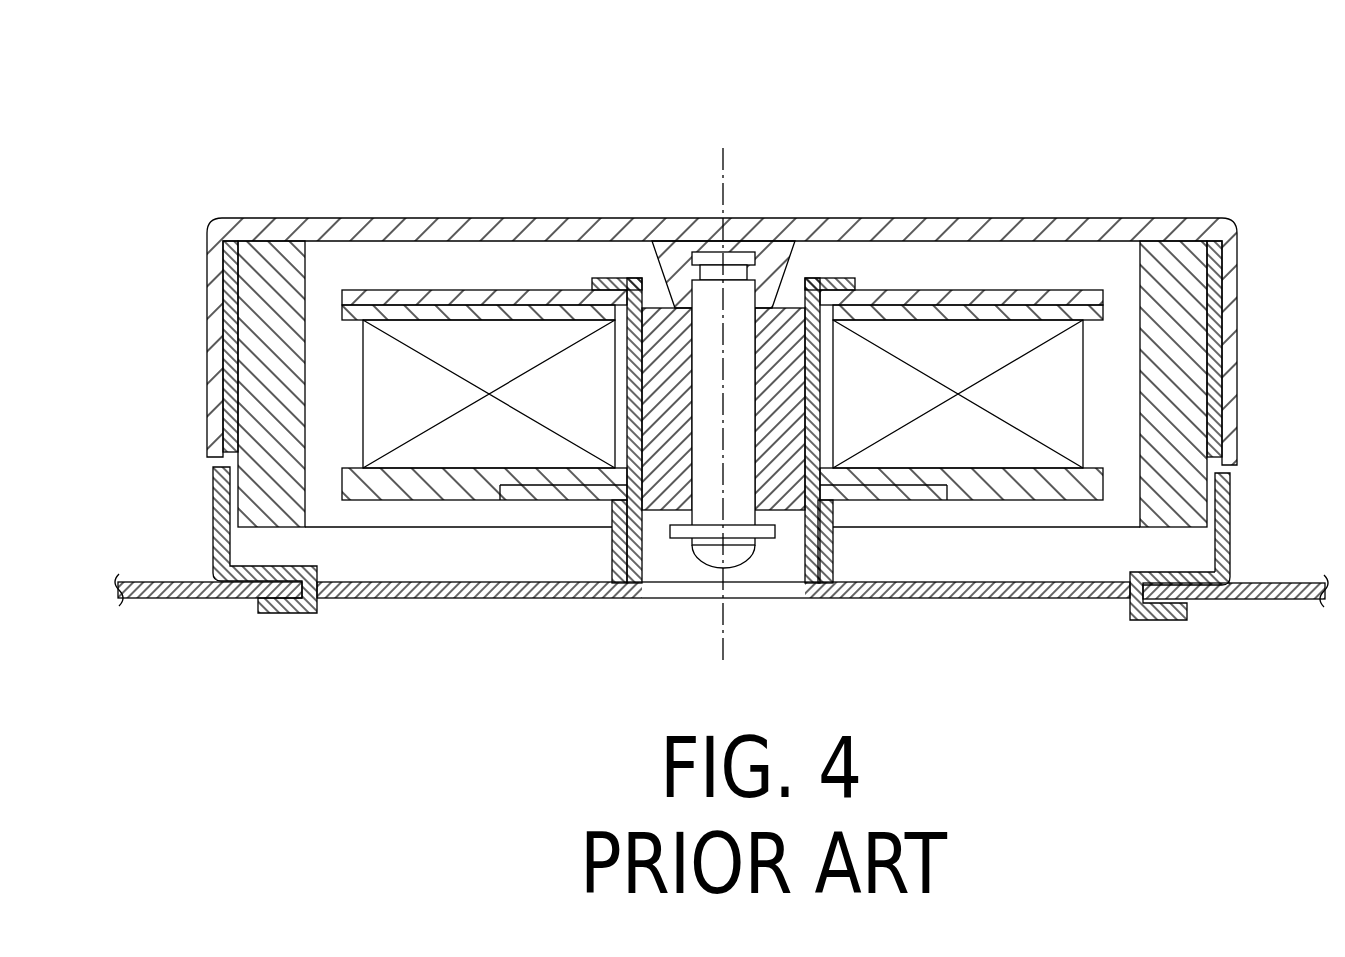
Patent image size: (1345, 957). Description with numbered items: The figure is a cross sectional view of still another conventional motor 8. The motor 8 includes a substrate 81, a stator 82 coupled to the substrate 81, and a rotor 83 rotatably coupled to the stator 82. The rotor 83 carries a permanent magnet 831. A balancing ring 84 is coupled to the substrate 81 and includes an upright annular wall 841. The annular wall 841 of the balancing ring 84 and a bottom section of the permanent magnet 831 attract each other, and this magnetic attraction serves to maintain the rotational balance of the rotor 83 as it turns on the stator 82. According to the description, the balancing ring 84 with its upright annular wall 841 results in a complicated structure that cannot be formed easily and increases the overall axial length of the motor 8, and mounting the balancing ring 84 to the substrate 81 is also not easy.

The motor 8 is at (1074, 140).
The substrate 81 is at (1237, 602).
The stator 82 is at (960, 350).
The rotor 83 is at (1208, 220).
The permanent magnet 831 is at (1177, 287).
The balancing ring 84 is at (1167, 562).
The annular wall 841 is at (1227, 520).